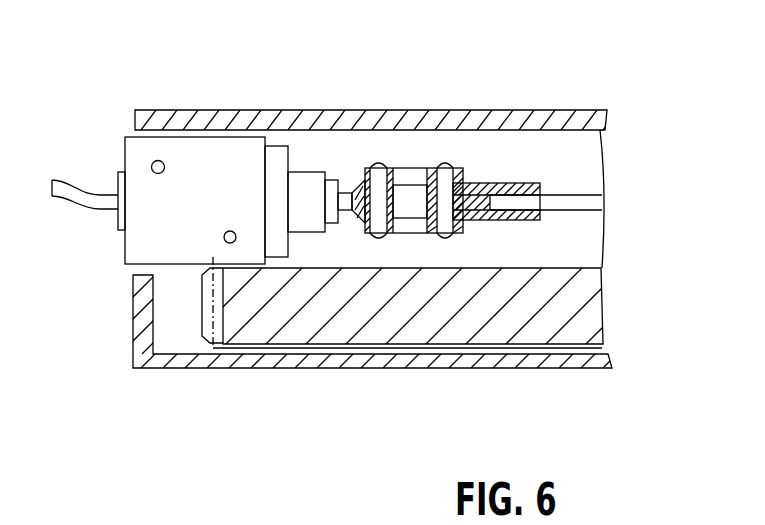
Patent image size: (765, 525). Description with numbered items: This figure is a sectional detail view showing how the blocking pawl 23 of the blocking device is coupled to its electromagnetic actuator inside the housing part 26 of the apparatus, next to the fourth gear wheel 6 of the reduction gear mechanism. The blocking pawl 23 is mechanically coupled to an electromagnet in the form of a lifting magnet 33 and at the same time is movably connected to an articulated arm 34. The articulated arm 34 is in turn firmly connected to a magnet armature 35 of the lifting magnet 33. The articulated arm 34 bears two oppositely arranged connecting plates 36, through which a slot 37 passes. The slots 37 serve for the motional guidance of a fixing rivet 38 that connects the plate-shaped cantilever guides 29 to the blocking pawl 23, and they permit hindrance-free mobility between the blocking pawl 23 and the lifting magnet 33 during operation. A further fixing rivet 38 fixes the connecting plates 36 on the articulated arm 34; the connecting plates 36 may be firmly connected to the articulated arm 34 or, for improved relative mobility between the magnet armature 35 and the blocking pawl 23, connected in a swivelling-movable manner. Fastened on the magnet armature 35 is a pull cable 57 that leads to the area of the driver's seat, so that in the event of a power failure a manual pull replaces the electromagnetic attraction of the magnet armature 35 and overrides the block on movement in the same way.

The fourth gear wheel 6 is at (273, 305).
The blocking pawl 23 is at (596, 202).
The housing part 26 is at (167, 120).
The cantilever guide 29 is at (467, 170).
The lifting magnet 33 is at (205, 160).
The articulated arm 34 is at (346, 180).
The magnet armature 35 is at (305, 193).
The connecting plates 36 is at (458, 177).
The slot 37 is at (423, 177).
The fixing rivet 38 is at (380, 238).
The pull cable 57 is at (78, 192).